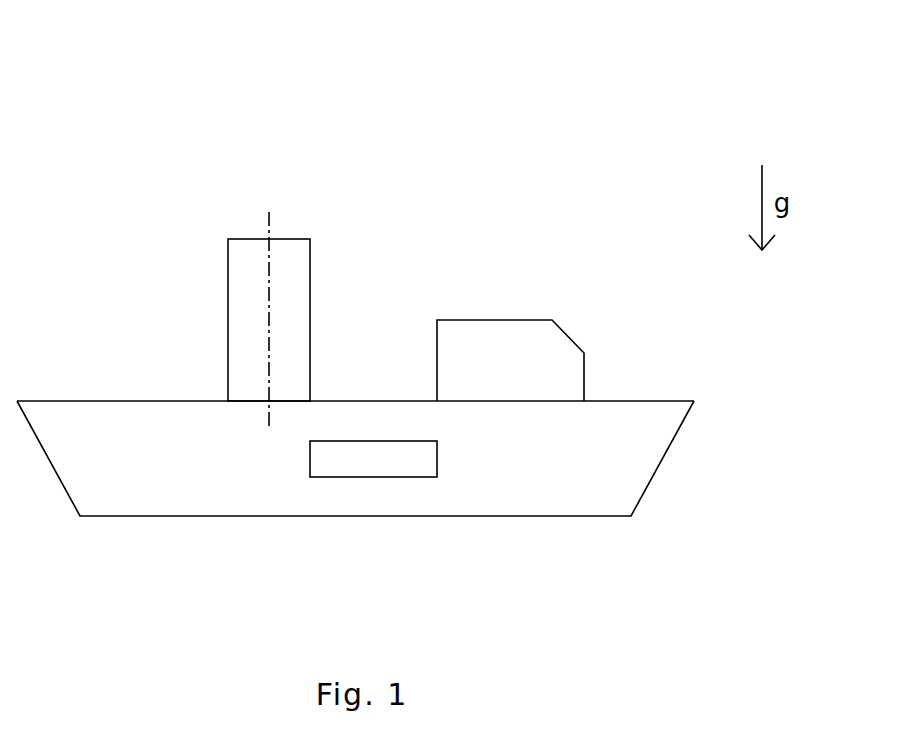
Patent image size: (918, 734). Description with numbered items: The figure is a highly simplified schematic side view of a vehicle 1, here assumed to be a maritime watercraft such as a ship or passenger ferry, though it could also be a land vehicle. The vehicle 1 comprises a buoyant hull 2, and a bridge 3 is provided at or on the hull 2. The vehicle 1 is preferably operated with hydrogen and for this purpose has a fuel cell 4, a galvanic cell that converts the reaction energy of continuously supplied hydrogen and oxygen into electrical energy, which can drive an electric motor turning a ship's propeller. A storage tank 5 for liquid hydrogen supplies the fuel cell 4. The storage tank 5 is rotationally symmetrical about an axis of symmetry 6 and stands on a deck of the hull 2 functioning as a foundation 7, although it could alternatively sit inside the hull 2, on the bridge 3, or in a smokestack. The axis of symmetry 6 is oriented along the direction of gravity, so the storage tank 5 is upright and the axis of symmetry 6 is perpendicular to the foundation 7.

The vehicle 1 is at (108, 79).
The hull 2 is at (508, 516).
The bridge 3 is at (522, 320).
The fuel cell 4 is at (370, 477).
The storage tank 5 is at (228, 293).
The axis of symmetry 6 is at (269, 222).
The foundation 7 is at (80, 401).